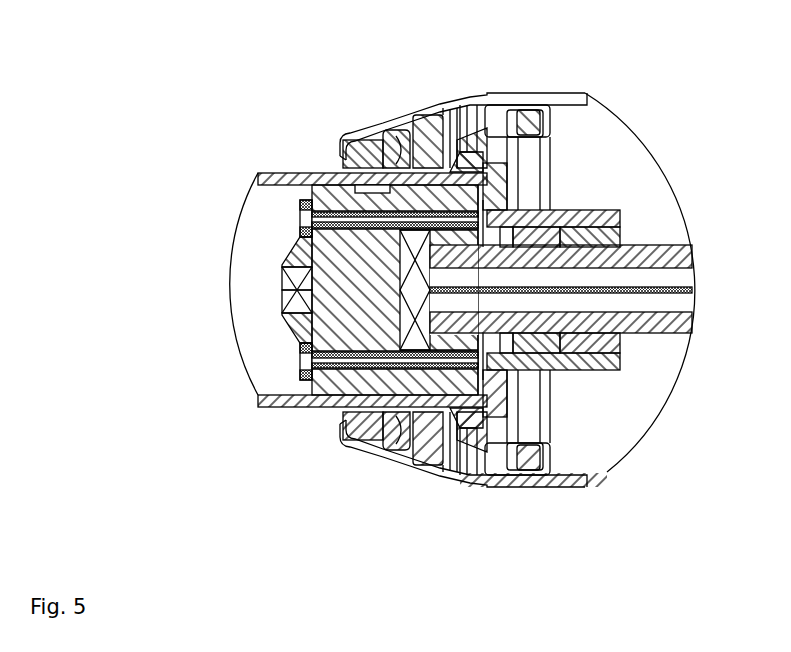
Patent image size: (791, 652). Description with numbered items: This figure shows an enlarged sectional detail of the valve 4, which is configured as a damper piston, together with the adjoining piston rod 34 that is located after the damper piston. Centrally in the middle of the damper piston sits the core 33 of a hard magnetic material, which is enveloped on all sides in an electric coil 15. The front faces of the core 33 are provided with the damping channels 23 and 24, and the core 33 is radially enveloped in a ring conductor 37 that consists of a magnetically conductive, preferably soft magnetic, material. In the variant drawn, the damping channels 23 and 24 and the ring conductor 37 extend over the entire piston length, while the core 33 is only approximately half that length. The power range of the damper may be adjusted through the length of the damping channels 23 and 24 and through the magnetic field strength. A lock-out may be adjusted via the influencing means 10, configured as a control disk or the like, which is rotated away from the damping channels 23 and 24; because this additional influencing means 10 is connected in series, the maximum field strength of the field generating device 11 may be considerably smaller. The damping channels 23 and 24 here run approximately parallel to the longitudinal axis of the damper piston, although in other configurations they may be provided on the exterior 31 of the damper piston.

The valve 4 is at (257, 233).
The influencing means 10 is at (293, 227).
The field generating device 11 is at (277, 273).
The electric coil 15 is at (277, 304).
The damping channel 23 is at (300, 214).
The damping channel 24 is at (302, 403).
The exterior 31 is at (313, 410).
The core 33 is at (290, 338).
The piston rod 34 is at (650, 343).
The ring conductor 37 is at (446, 162).